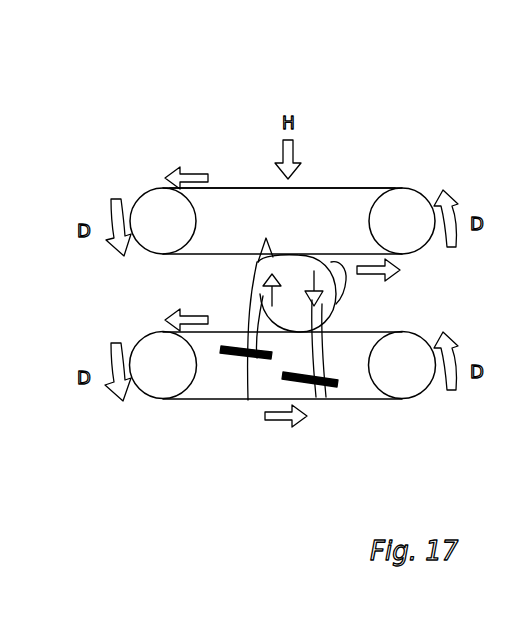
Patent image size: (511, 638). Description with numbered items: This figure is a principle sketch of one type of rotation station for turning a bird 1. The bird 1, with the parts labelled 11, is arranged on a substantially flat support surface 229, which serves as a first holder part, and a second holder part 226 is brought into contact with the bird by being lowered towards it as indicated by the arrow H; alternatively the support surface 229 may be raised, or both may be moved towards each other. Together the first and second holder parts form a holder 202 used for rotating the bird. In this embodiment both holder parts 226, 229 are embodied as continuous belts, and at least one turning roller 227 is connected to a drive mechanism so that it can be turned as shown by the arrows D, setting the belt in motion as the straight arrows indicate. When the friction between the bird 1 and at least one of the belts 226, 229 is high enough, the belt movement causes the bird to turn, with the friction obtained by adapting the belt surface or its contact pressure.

The bird 1 is at (308, 248).
The gripping fingers 11 is at (248, 400).
The holder 202 is at (380, 176).
The second holder part 226 is at (350, 253).
The turning roller 227 is at (197, 213).
The support surface 229 is at (343, 333).